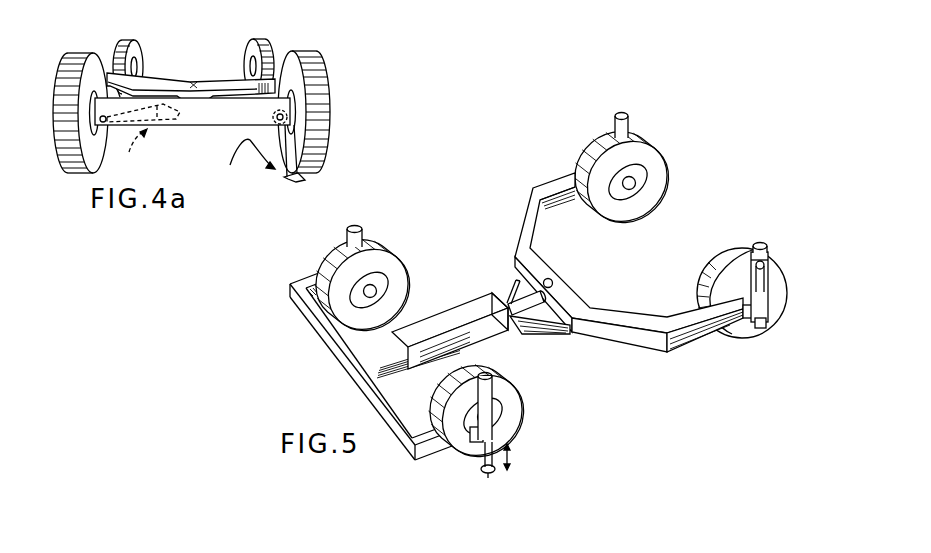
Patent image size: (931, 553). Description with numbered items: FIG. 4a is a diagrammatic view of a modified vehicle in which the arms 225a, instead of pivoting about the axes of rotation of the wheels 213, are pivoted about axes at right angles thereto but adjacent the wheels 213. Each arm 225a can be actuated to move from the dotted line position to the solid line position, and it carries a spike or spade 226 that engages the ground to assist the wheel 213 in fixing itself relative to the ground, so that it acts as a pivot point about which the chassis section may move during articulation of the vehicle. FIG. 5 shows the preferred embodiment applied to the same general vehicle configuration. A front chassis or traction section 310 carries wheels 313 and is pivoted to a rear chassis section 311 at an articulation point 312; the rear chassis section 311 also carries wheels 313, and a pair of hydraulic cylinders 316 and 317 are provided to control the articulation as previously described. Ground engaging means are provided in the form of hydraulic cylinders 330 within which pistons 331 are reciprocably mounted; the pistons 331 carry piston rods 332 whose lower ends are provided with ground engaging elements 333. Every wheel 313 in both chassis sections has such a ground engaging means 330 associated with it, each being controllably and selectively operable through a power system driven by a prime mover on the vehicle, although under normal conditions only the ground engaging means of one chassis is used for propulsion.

In FIG. 4A, the wheel 213 is at (58, 152).
In FIG. 4A, the arm 225a is at (156, 116).
In FIG. 4A, the spike or spade 226 is at (189, 118).
In FIG. 5, the front chassis or traction section 310 is at (367, 372).
In FIG. 5, the rear chassis section 311 is at (611, 320).
In FIG. 5, the articulation point 312 is at (553, 281).
In FIG. 5, the wheel 313 is at (455, 383).
In FIG. 5, the hydraulic cylinder 316 is at (541, 334).
In FIG. 5, the hydraulic cylinder 317 is at (509, 300).
In FIG. 5, the hydraulic cylinder 330 is at (347, 238).
In FIG. 5, the piston 331 is at (755, 270).
In FIG. 5, the piston rod 332 is at (755, 285).
In FIG. 5, the ground engaging element 333 is at (766, 328).